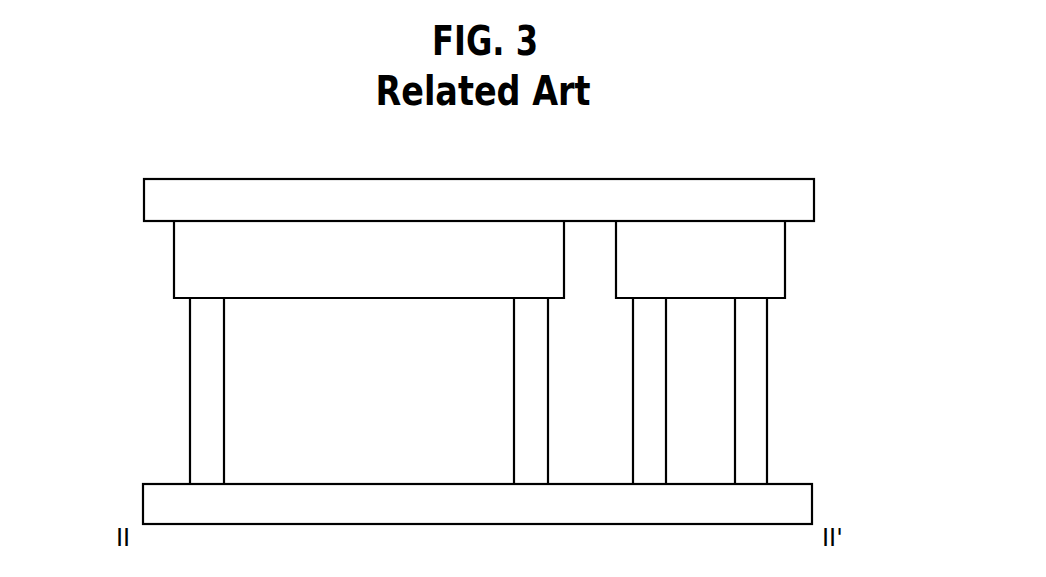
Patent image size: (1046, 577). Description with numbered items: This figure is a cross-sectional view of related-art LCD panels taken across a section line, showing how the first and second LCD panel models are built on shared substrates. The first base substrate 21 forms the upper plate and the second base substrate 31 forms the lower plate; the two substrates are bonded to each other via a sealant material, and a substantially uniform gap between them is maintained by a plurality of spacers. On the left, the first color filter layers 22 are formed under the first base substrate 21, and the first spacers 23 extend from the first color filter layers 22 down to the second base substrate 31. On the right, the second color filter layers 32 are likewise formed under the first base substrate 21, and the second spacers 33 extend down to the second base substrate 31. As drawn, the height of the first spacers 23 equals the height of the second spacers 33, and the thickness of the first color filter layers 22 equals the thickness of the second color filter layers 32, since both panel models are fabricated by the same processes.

The first base substrate 21 is at (806, 200).
The first color filter layers 22 is at (177, 257).
The first spacers 23 is at (200, 410).
The second base substrate 31 is at (806, 503).
The second color filter layers 32 is at (778, 257).
The second spacers 33 is at (757, 397).